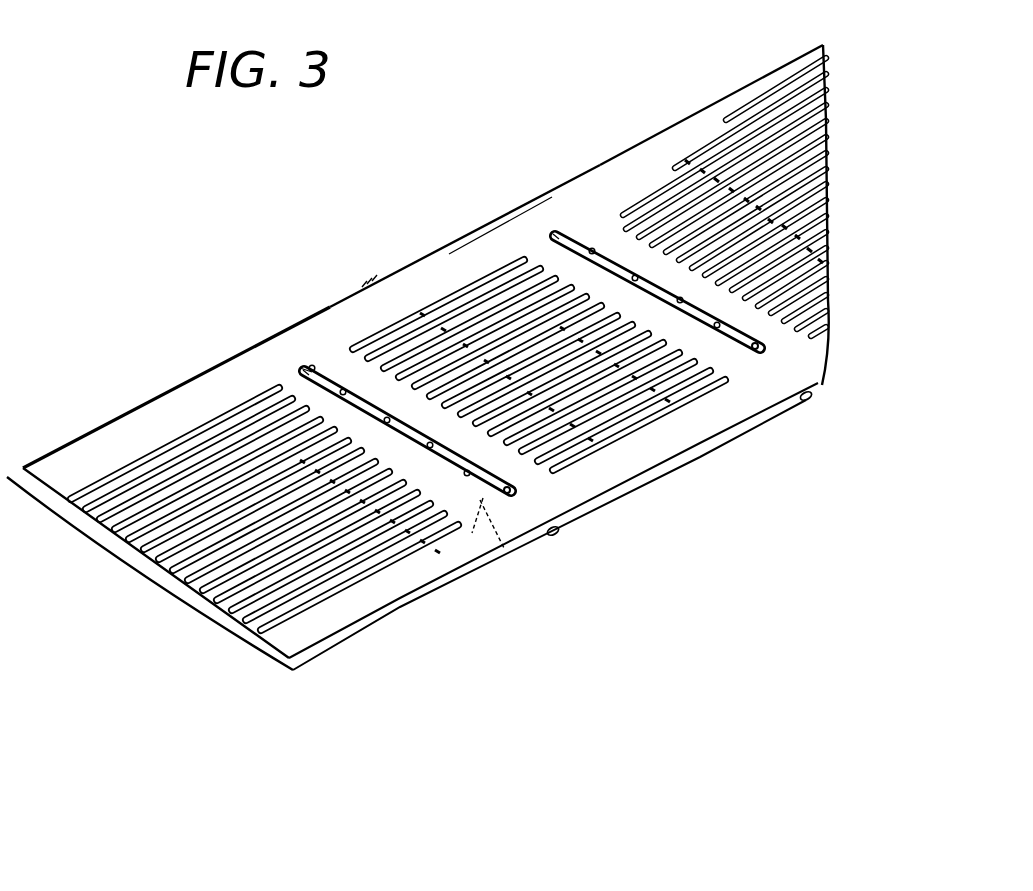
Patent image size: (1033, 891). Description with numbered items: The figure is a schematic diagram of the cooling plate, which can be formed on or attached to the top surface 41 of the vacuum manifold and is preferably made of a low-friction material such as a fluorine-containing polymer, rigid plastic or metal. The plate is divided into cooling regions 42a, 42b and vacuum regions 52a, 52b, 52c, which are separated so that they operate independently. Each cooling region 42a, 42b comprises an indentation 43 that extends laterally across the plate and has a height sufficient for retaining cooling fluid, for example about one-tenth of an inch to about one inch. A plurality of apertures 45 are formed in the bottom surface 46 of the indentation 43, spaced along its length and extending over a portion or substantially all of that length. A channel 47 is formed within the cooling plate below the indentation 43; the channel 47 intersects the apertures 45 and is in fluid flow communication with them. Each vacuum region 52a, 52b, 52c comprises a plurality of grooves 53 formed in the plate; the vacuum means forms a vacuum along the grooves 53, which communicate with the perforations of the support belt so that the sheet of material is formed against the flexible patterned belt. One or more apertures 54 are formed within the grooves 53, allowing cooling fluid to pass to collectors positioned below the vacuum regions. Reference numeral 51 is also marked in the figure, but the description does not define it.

The top surface 41 is at (312, 366).
The cooling region 42a is at (557, 231).
The cooling region 42b is at (307, 363).
The indentation 43 is at (489, 500).
The apertures 45 is at (343, 390).
The bottom surface 46 is at (452, 480).
The channel 47 is at (556, 536).
The fold line 51 is at (688, 153).
The vacuum region 52a is at (697, 165).
The vacuum region 52b is at (463, 283).
The vacuum region 52c is at (185, 432).
The grooves 53 is at (220, 607).
The apertures 54 is at (700, 167).